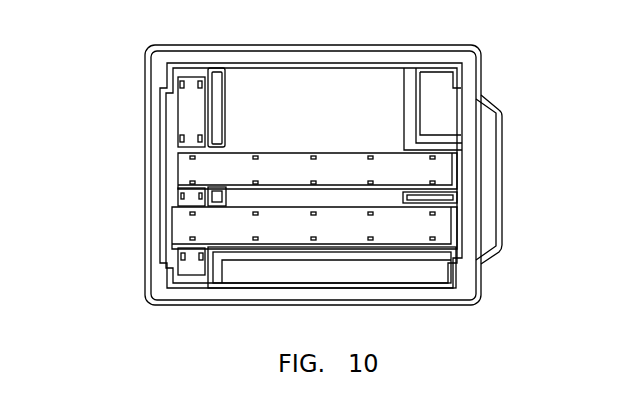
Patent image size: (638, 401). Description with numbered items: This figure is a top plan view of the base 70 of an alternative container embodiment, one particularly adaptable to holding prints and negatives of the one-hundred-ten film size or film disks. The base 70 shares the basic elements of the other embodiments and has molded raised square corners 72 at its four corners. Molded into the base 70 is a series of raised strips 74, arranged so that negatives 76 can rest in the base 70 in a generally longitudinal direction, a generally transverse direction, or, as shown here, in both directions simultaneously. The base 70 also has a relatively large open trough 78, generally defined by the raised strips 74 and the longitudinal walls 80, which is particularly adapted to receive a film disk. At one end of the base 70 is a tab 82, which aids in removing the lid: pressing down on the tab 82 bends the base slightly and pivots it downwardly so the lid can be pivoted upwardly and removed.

The base 70 is at (112, 173).
The raised square corners 72 is at (147, 57).
The raised strips 74 is at (221, 113).
The negatives 76 is at (192, 115).
The open trough 78 is at (328, 110).
The longitudinal walls 80 is at (318, 47).
The tab 82 is at (502, 181).